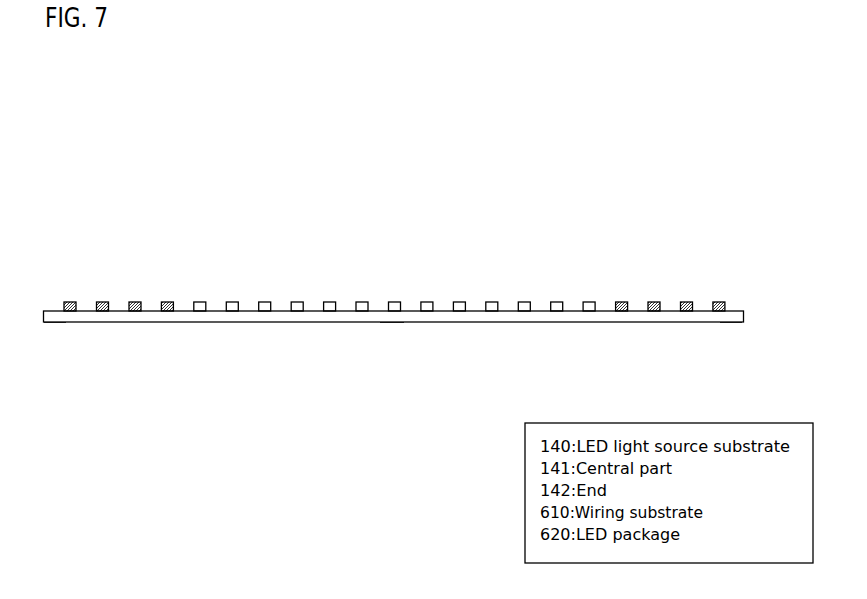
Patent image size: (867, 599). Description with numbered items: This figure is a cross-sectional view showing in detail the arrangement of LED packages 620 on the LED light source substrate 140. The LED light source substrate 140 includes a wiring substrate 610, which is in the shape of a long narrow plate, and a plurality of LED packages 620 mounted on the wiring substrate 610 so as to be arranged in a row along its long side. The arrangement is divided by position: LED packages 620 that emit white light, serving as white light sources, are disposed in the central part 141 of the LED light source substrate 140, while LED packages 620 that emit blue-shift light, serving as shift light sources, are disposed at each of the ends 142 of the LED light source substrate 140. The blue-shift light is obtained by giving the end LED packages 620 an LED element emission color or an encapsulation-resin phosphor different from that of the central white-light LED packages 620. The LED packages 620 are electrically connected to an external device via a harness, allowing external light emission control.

The LED light source substrate 140 is at (645, 203).
The central part 141 is at (392, 330).
The end 142 is at (54, 330).
The wiring substrate 610 is at (537, 322).
The LED package 620 is at (394, 302).